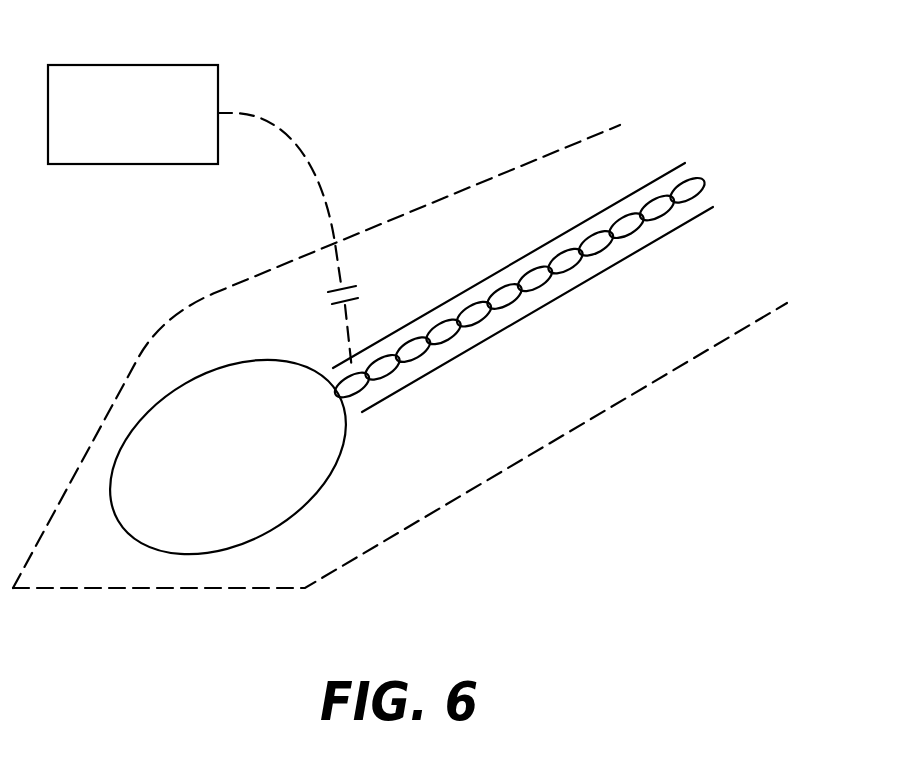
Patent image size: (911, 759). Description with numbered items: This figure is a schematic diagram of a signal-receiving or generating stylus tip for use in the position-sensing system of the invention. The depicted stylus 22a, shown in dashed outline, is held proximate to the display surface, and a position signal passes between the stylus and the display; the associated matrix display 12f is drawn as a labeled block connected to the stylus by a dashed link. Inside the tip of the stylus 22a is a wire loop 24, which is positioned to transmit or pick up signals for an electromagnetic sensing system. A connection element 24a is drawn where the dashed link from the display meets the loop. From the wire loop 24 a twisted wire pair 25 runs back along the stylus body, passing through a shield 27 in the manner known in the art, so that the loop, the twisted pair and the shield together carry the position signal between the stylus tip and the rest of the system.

The matrix display 12f is at (84, 65).
The stylus 22a is at (540, 157).
The wire loop 24 is at (212, 368).
The power connection 24a is at (353, 283).
The twisted wire pair 25 is at (535, 272).
The shield 27 is at (499, 333).